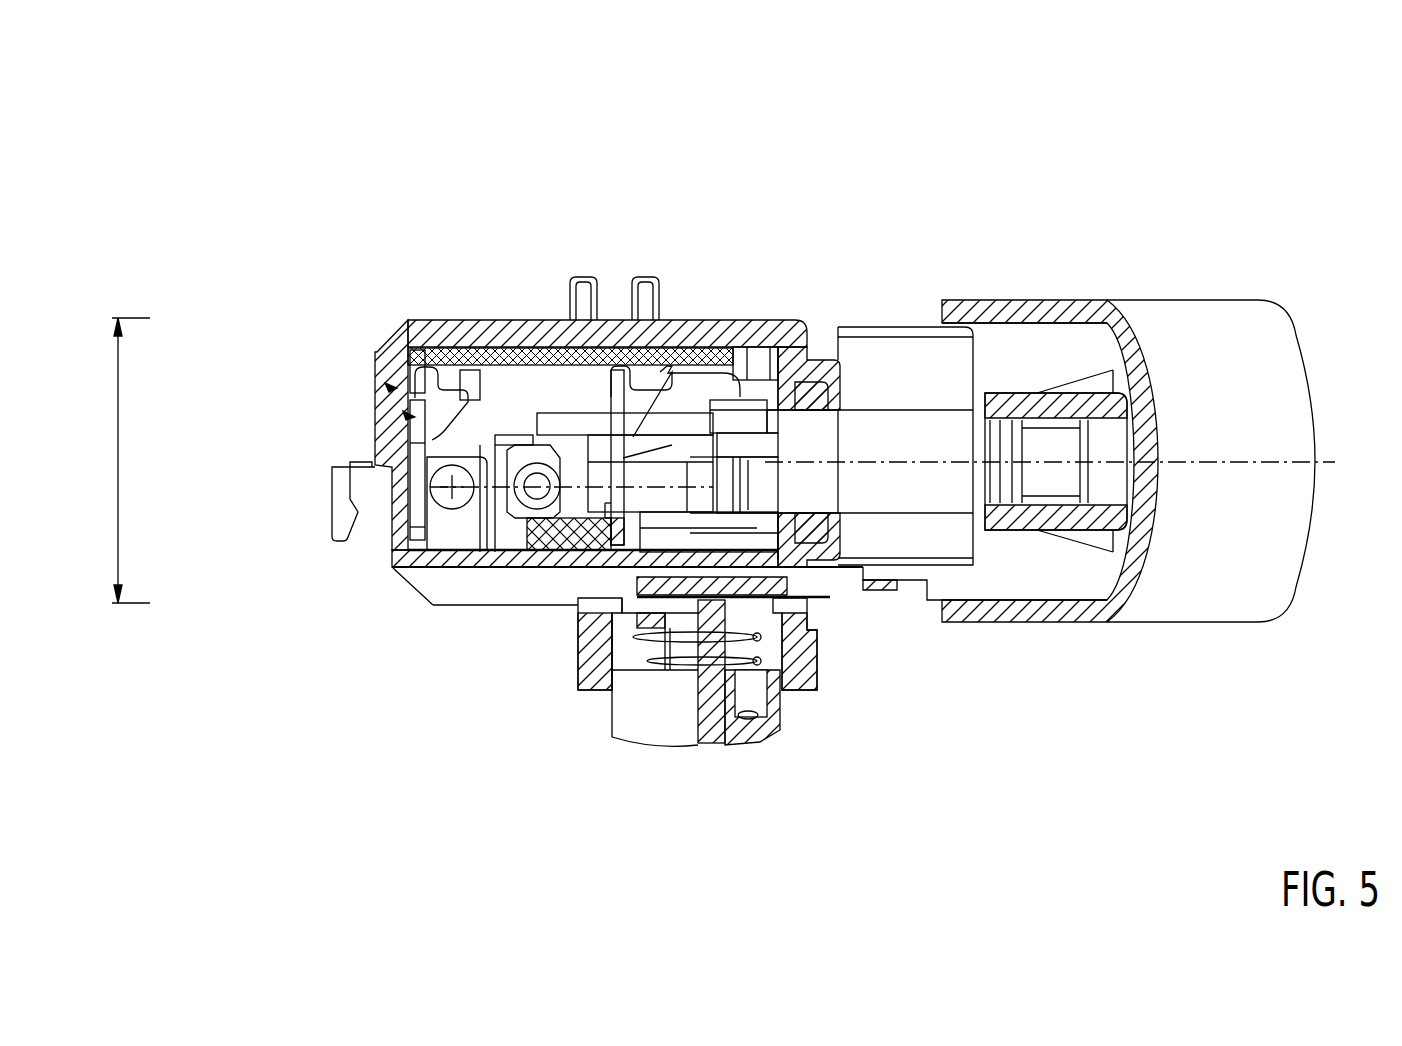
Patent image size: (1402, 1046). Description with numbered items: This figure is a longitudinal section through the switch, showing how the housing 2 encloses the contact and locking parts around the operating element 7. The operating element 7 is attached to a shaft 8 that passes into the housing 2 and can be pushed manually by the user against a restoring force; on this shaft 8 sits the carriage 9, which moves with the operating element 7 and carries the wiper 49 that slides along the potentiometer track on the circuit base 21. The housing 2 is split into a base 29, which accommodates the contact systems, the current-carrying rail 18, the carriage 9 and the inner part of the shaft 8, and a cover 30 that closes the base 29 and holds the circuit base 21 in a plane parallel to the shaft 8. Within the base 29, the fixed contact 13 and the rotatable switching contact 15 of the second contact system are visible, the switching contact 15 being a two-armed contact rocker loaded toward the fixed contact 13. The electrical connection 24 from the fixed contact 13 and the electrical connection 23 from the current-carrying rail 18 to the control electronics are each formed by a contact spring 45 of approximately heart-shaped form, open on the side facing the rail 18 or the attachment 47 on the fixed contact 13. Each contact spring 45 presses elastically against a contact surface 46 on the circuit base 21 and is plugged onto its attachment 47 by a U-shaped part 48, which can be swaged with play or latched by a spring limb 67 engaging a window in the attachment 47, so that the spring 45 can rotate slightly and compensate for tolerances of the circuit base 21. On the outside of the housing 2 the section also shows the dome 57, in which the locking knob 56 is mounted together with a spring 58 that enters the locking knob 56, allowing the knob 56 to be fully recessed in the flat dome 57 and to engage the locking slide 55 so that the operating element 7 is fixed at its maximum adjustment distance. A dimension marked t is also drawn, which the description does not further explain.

The housing 2 is at (432, 581).
The operating element 7 is at (1185, 598).
The shaft 8 is at (883, 462).
The carriage 9 is at (510, 572).
The fixed contact 13 is at (433, 505).
The switching contact 15 is at (480, 498).
The current-carrying rail 18 is at (573, 577).
The circuit base 21 is at (727, 362).
The electrical connection 23 is at (597, 393).
The electrical connection 24 is at (397, 388).
The base 29 is at (430, 582).
The cover 30 is at (775, 345).
The contact spring 45 is at (452, 372).
The contact surface 46 is at (425, 350).
The attachment 47 is at (672, 362).
The U-shaped part 48 is at (412, 420).
The wiper 49 is at (692, 370).
The locking slide 55 is at (877, 590).
The locking knob 56 is at (663, 712).
The dome 57 is at (593, 667).
The spring 58 is at (757, 637).
The spring limb 67 is at (415, 417).
The depth dimension t is at (121, 460).